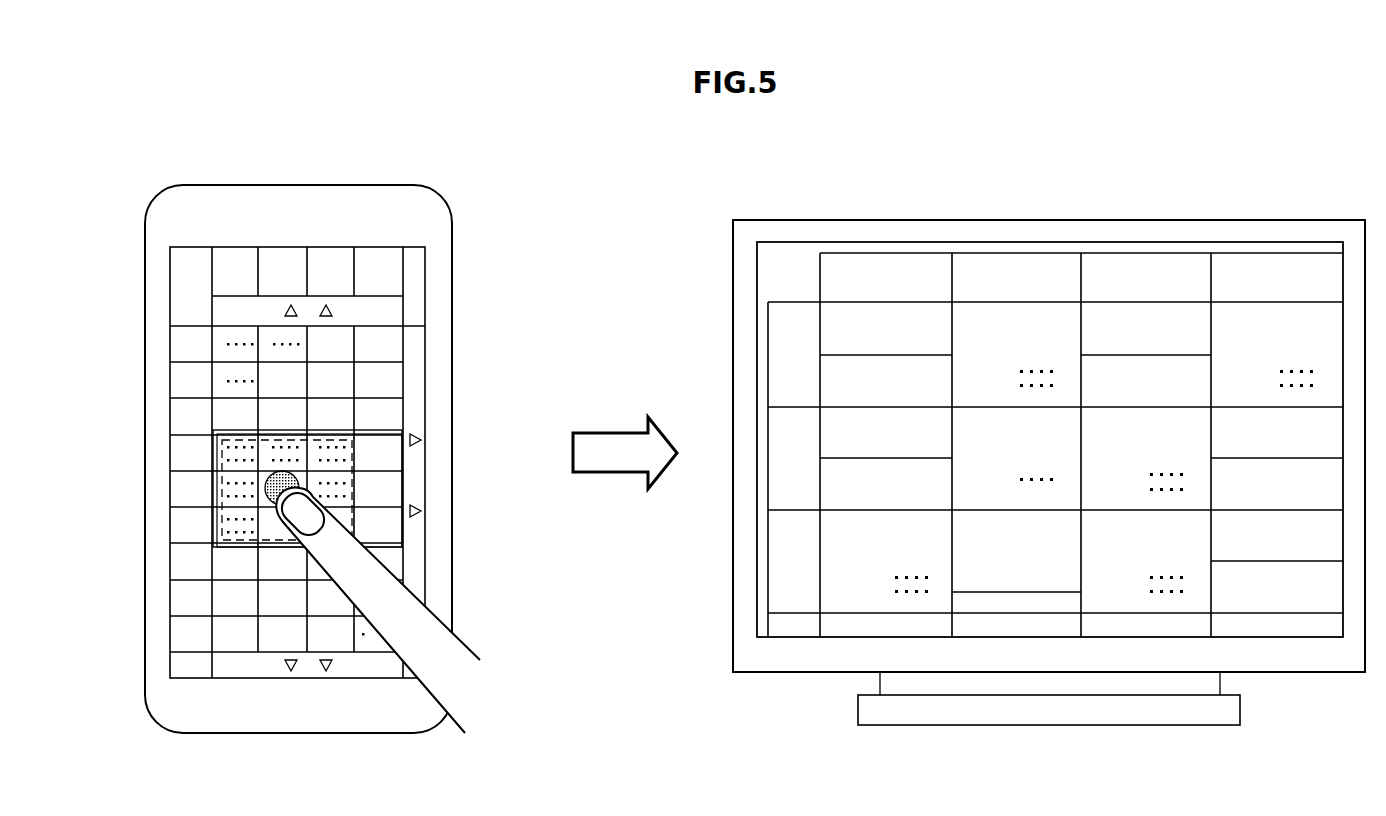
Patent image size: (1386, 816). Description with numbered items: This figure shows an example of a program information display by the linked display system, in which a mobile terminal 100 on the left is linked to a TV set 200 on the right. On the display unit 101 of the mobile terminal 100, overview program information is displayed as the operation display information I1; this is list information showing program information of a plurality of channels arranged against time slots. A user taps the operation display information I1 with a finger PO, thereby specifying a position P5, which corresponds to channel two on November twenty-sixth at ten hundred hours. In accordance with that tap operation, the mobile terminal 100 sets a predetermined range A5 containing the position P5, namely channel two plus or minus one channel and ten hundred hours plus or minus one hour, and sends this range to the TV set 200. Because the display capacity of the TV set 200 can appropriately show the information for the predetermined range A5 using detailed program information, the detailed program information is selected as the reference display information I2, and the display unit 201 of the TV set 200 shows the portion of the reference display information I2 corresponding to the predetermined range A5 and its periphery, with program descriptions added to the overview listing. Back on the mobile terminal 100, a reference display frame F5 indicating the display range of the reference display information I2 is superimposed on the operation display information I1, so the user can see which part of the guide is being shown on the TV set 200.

The mobile terminal 100 is at (297, 185).
The display unit 101 is at (404, 247).
The operation display information I1 is at (413, 348).
The reference display frame F5 is at (372, 433).
The position P5 is at (302, 472).
The predetermined range A5 is at (352, 493).
The finger PO is at (413, 594).
The TV set 200 is at (1048, 222).
The display unit 201 is at (1230, 245).
The reference display information I2 is at (776, 331).